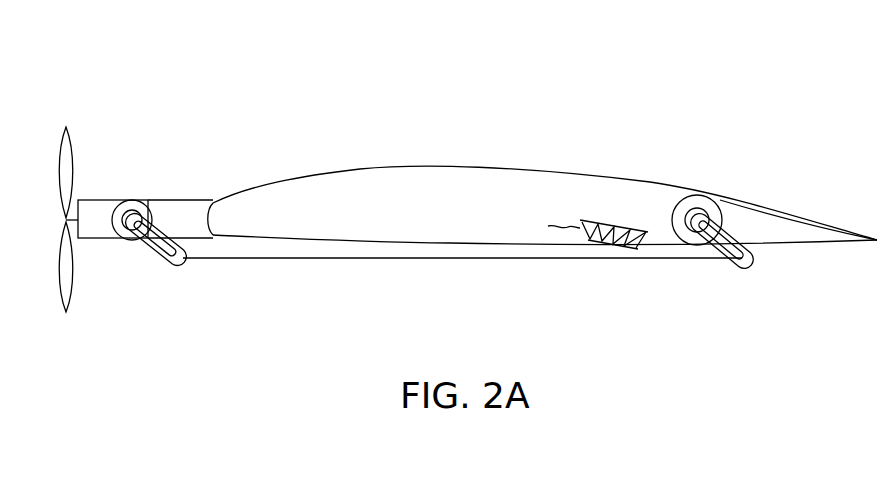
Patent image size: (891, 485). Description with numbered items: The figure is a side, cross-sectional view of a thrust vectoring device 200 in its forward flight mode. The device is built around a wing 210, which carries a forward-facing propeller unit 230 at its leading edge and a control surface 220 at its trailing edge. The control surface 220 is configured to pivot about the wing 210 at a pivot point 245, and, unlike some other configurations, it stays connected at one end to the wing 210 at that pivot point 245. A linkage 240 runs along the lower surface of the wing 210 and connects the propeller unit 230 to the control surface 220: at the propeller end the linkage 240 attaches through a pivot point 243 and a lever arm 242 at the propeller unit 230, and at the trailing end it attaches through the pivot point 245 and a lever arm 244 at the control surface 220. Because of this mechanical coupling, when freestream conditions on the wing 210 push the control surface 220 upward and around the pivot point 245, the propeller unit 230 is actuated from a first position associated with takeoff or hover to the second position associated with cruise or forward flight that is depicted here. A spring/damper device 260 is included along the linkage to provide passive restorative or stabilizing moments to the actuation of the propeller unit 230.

The thrust vectoring device 200 is at (403, 120).
The wing 210 is at (563, 168).
The control surface 220 is at (783, 212).
The propeller unit 230 is at (90, 195).
The linkage 240 is at (438, 258).
The lever arm 242 is at (146, 258).
The pivot point 243 is at (150, 207).
The lever arm 244 is at (752, 263).
The pivot point 245 is at (712, 210).
The spring/damper device 260 is at (579, 244).